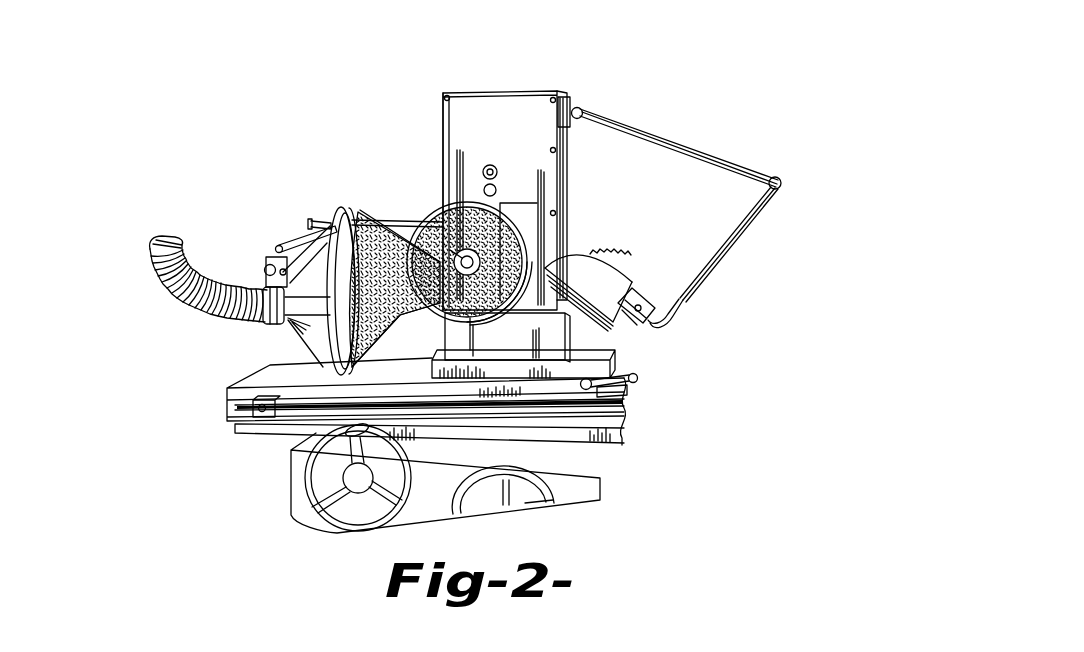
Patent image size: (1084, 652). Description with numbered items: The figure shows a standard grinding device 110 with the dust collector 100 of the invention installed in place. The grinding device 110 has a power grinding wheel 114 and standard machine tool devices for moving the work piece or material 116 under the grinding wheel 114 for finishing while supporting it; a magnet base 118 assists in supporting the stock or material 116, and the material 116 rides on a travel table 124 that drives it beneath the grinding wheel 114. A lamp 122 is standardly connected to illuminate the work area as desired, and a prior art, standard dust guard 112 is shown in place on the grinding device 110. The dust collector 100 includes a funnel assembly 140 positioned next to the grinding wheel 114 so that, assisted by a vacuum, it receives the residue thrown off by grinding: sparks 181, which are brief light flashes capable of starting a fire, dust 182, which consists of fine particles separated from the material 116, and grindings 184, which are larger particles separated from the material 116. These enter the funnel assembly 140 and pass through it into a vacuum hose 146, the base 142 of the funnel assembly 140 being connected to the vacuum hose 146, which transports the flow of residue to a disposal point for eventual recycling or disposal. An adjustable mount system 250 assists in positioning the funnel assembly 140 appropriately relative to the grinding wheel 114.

The dust collector 100 is at (301, 252).
The grinding device 110 is at (525, 88).
The dust guard 112 is at (521, 240).
The grinding wheel 114 is at (453, 210).
The material 116 is at (518, 337).
The magnet base 118 is at (557, 387).
The lamp 122 is at (607, 287).
The travel table 124 is at (305, 380).
The funnel assembly 140 is at (307, 375).
The base 142 is at (287, 330).
The vacuum hose 146 is at (177, 237).
The sparks 181 is at (284, 137).
The dust 182 is at (263, 166).
The grindings 184 is at (326, 228).
The adjustable mount system 250 is at (428, 250).